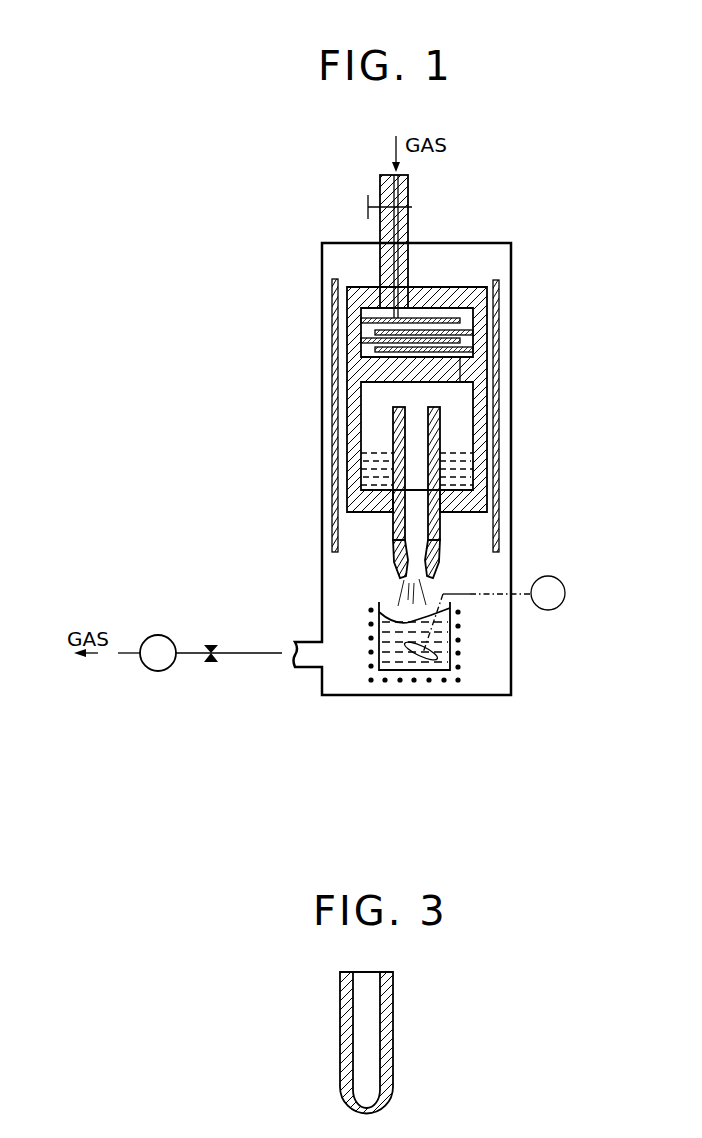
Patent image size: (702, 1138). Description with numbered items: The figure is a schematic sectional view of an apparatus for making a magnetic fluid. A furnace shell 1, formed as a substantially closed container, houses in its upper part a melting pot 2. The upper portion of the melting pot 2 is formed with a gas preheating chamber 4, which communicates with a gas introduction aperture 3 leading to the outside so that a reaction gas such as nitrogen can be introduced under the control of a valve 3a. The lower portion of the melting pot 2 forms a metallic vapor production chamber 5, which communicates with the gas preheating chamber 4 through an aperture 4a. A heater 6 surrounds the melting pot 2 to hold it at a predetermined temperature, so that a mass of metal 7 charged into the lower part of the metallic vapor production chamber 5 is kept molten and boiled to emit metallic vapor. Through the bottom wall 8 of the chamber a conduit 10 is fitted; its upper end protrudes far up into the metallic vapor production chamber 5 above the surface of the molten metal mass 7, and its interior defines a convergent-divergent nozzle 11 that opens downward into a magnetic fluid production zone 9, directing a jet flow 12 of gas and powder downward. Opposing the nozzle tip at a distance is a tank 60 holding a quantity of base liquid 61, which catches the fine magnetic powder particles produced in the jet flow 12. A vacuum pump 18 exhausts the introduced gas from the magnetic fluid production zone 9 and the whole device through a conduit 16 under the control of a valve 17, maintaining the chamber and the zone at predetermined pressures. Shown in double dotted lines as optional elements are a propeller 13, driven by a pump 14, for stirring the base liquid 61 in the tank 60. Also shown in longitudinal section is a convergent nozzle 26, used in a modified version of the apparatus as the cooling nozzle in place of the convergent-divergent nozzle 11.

In FIG. 1, the furnace shell 1 is at (511, 258).
In FIG. 1, the melting pot 2 is at (474, 513).
In FIG. 1, the gas introduction aperture 3 is at (400, 216).
In FIG. 1, the valve 3a is at (368, 207).
In FIG. 1, the gas preheating chamber 4 is at (462, 343).
In FIG. 1, the aperture 4a is at (463, 372).
In FIG. 1, the metallic vapor production chamber 5 is at (458, 428).
In FIG. 1, the heater 6 is at (332, 305).
In FIG. 1, the mass of metal 7 is at (470, 476).
In FIG. 1, the bottom wall 8 is at (367, 513).
In FIG. 1, the magnetic fluid production zone 9 is at (348, 613).
In FIG. 1, the conduit 10 is at (395, 440).
In FIG. 1, the nozzle 11 is at (432, 566).
In FIG. 1, the jet flow 12 is at (406, 594).
In FIG. 1, the propeller 13 is at (438, 653).
In FIG. 1, the pump 14 is at (548, 610).
In FIG. 1, the conduit 16 is at (263, 651).
In FIG. 1, the valve 17 is at (211, 643).
In FIG. 1, the vacuum pump 18 is at (146, 641).
In FIG. 3, the convergent nozzle 26 is at (388, 1023).
In FIG. 1, the tank 60 is at (450, 675).
In FIG. 1, the base liquid 61 is at (405, 672).